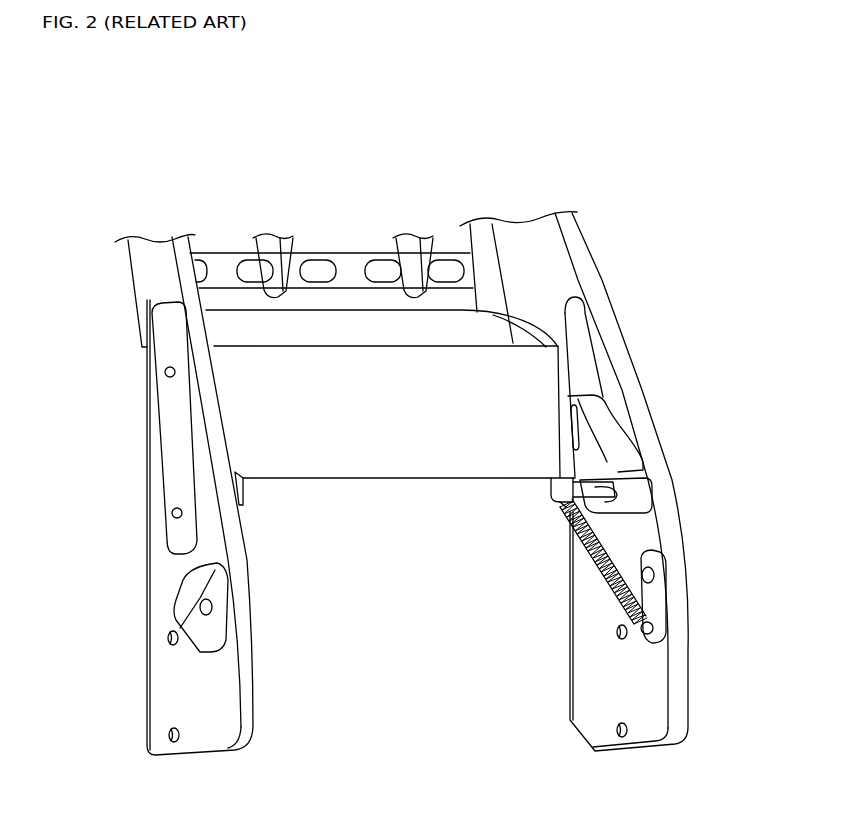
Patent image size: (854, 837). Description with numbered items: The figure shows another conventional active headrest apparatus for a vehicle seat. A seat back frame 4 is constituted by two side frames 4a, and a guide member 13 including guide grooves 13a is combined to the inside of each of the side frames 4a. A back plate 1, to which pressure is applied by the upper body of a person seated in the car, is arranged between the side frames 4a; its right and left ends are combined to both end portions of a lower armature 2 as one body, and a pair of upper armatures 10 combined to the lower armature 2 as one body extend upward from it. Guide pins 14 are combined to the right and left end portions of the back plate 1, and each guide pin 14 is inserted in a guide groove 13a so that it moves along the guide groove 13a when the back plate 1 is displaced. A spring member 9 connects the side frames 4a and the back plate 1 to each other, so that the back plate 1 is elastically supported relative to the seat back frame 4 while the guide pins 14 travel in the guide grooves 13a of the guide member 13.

The back plate 1 is at (392, 465).
The lower armature 2 is at (515, 312).
The seat back frame 4 is at (589, 244).
The side frames 4a is at (150, 430).
The spring member 9 is at (610, 543).
The upper armatures 10 is at (411, 252).
The guide member 13 is at (253, 487).
The guide grooves 13a is at (565, 438).
The guide pins 14 is at (590, 490).